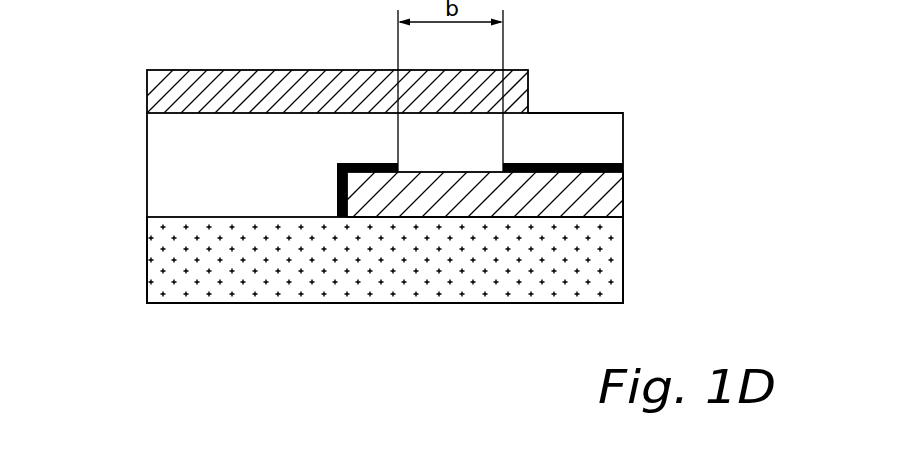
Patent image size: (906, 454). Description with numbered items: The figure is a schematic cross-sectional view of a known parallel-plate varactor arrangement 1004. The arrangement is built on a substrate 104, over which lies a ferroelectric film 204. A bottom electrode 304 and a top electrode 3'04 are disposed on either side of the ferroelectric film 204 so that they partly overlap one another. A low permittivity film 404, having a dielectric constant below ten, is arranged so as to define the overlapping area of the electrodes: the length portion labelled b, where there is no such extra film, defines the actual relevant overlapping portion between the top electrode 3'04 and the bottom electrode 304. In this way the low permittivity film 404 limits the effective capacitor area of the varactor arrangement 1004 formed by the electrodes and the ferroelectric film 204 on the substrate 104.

The substrate 104 is at (608, 260).
The ferroelectric film 204 is at (183, 172).
The bottom electrode 304 is at (603, 200).
The top electrode 3'04 is at (452, 88).
The low permittivity film 404 is at (623, 168).
The parallel-plate varactor arrangement 1004 is at (276, 323).